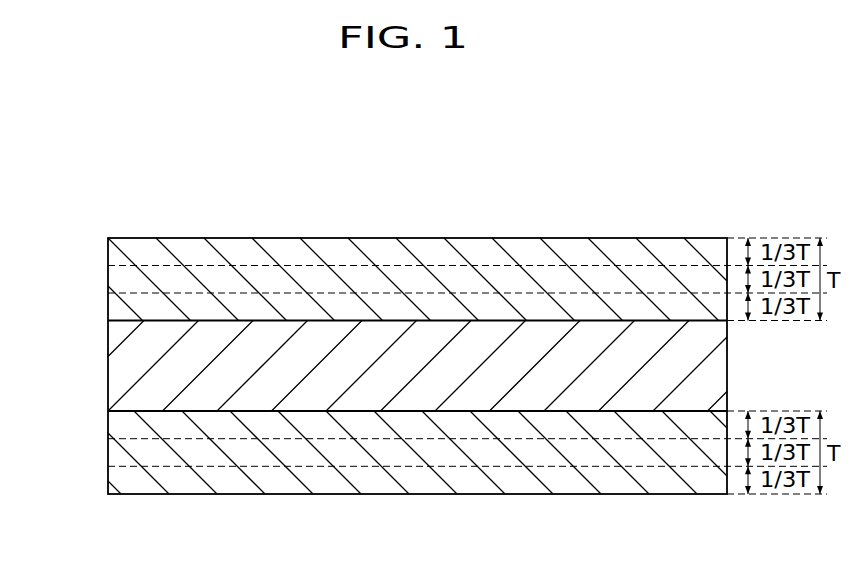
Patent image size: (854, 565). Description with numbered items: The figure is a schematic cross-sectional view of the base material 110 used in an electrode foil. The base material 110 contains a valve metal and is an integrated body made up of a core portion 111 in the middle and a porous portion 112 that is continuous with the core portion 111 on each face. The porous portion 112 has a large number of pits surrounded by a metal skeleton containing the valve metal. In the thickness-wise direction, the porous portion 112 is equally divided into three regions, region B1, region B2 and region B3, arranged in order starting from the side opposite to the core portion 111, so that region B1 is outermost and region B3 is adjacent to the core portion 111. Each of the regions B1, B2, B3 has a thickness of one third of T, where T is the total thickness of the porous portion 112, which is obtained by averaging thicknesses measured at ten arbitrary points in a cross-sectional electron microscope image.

The base material 110 is at (350, 181).
The core portion 111 is at (82, 320).
The porous portion 112 is at (82, 238).
The region B1 is at (438, 253).
The region B2 is at (523, 280).
The region B3 is at (603, 307).